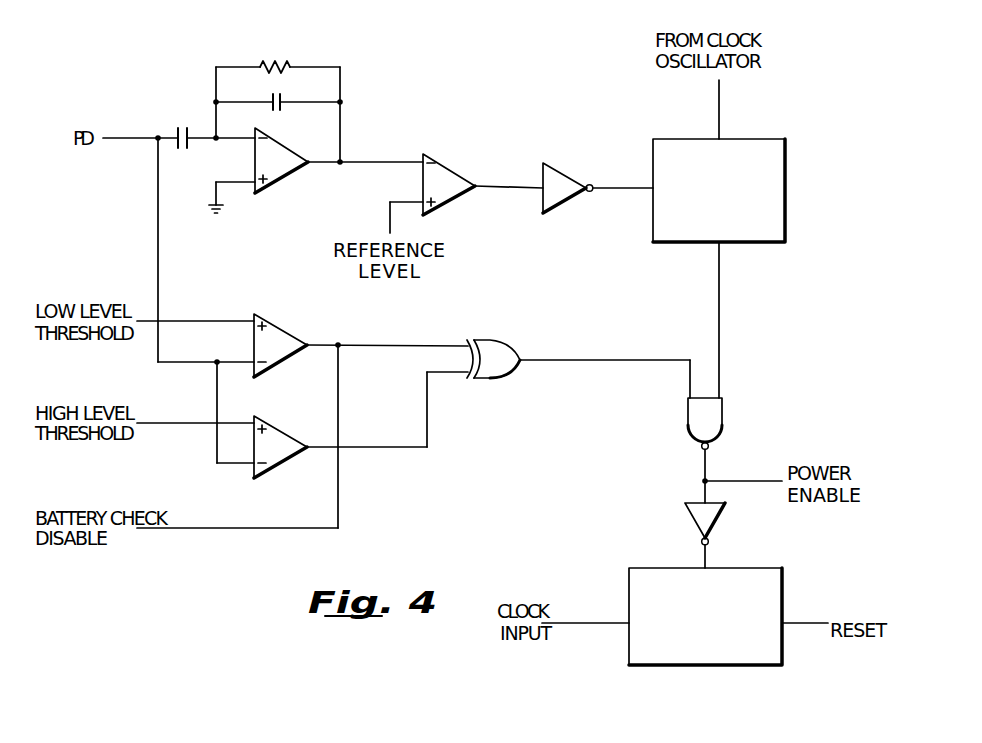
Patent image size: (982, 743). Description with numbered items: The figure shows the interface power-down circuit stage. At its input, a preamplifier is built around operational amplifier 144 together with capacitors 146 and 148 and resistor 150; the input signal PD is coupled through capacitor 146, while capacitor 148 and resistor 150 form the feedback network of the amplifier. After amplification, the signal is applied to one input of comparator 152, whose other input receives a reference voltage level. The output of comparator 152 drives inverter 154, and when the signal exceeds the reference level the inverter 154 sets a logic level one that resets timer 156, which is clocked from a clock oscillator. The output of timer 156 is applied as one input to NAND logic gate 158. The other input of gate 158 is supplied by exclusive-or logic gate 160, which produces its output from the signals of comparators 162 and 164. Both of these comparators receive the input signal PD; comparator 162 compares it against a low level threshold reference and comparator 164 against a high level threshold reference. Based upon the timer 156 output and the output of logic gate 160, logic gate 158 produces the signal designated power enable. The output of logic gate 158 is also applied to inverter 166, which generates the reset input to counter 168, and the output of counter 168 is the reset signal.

The operational amplifier 144 is at (282, 178).
The capacitor 146 is at (178, 128).
The capacitor 148 is at (286, 107).
The resistor 150 is at (290, 57).
The comparator 152 is at (442, 163).
The inverter 154 is at (567, 208).
The timer 156 is at (787, 192).
The NAND logic gate 158 is at (725, 417).
The exclusive-or logic gate 160 is at (490, 378).
The comparator 162 is at (277, 322).
The comparator 164 is at (285, 463).
The inverter 166 is at (687, 509).
The counter 168 is at (702, 667).